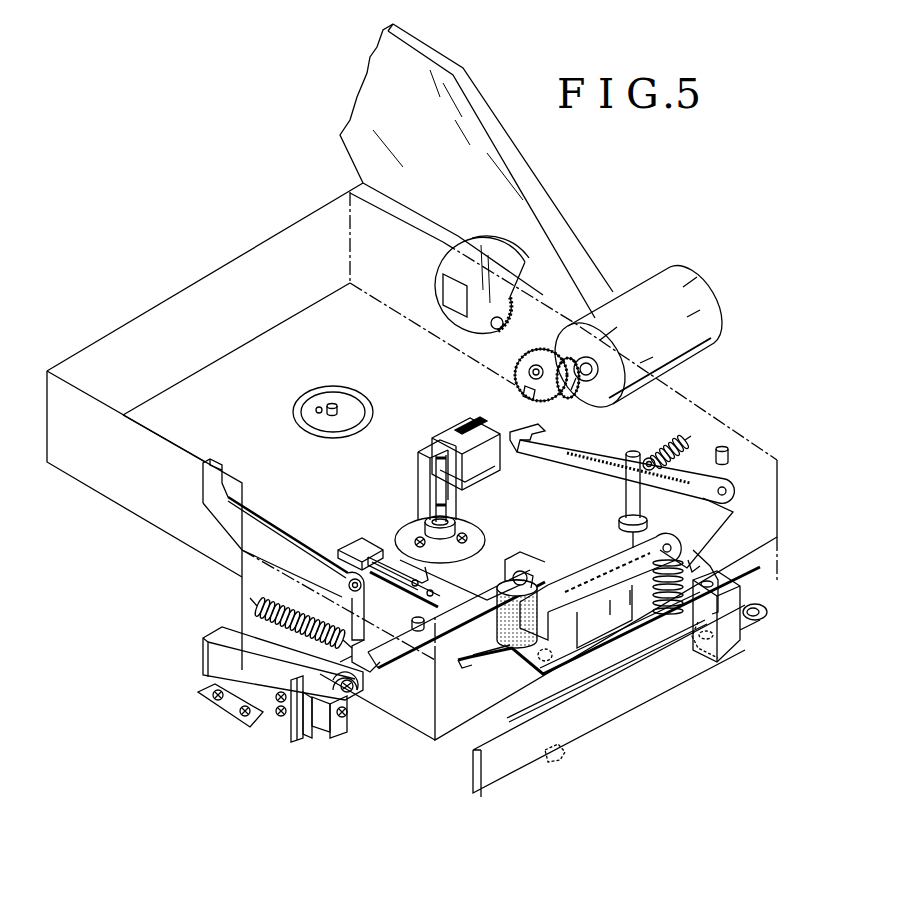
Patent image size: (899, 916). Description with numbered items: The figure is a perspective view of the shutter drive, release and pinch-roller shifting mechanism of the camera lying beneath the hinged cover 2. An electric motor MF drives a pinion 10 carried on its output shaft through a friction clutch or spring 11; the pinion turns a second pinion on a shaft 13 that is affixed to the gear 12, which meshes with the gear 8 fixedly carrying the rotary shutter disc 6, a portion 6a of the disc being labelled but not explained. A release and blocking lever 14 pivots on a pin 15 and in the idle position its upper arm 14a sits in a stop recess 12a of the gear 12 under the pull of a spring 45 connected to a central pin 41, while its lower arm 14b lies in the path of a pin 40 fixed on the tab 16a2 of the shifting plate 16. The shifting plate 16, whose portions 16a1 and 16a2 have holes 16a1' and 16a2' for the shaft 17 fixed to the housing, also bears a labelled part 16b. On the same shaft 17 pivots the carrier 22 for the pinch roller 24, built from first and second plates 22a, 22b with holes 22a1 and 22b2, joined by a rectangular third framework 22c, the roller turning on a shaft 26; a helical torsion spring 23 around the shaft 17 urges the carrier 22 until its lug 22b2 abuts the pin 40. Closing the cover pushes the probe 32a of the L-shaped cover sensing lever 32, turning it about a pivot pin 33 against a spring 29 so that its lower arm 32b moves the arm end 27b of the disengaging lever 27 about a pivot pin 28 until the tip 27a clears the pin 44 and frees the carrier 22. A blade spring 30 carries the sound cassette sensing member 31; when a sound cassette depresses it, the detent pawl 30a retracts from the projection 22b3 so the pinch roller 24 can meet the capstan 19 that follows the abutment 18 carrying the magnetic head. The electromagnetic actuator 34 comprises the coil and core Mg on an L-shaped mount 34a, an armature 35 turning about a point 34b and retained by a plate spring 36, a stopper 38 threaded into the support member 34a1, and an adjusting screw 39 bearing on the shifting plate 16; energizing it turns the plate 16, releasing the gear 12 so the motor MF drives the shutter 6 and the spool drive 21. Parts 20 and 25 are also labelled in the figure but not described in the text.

The cover 2 is at (434, 169).
The rotary shutter disc 6 is at (507, 256).
The window of cam gear 6a is at (443, 289).
The gear 8 is at (522, 318).
The pinion 10 is at (592, 381).
The friction clutch or spring 11 is at (573, 396).
The gear 12 is at (542, 349).
The stop recess 12a is at (525, 393).
The shaft 13 is at (529, 373).
The release and blocking lever 14 is at (730, 482).
The upper arm 14a is at (545, 434).
The lower arm 14b is at (692, 532).
The pin 15 is at (728, 446).
The shifting plate 16 is at (658, 682).
The hole of base plate 16a1 is at (737, 590).
The hole 16a1' is at (733, 582).
The tab 16a2 is at (758, 652).
The hole 16a2' is at (713, 662).
The notch of base plate 16b is at (565, 750).
The shaft 17 is at (633, 451).
The abutment 18 is at (474, 435).
The capstan 19 is at (436, 494).
The guide bracket 20 is at (418, 470).
The spool drive 21 is at (362, 410).
The carrier 22 is at (612, 580).
The first plate 22a is at (577, 590).
The hole 22a1 is at (668, 544).
The second plate 22b is at (578, 678).
The lug 22b2 is at (700, 575).
The projection 22b3 is at (466, 670).
The third framework 22c is at (600, 655).
The helical torsion spring 23 is at (517, 722).
The pinch roller 24 is at (500, 642).
The plunger 25 is at (524, 574).
The shaft 26 is at (535, 581).
The disengaging lever 27 is at (462, 612).
The tip 27a is at (508, 560).
The arm end 27b is at (398, 658).
The pivot pin 28 is at (420, 632).
The spring 29 is at (272, 629).
The blade spring 30 is at (405, 587).
The detent pawl 30a is at (410, 560).
The sound cassette sensing member 31 is at (362, 540).
The cover sensing lever 32 is at (288, 545).
The probe 32a is at (213, 459).
The lower arm 32b is at (376, 665).
The pivot pin 33 is at (351, 592).
The electromagnetic actuator 34 is at (250, 700).
The mount 34a is at (208, 683).
The support member 34a1 is at (345, 738).
The pivot point 34b is at (298, 742).
The armature 35 is at (318, 738).
The plate spring 36 is at (278, 718).
The stopper 38 is at (349, 716).
The adjusting screw 39 is at (355, 691).
The pin 40 is at (757, 622).
The central pin 41 is at (680, 441).
The pin 44 is at (540, 662).
The spring 45 is at (650, 457).
The electric motor MF is at (640, 337).
The coil and core Mg is at (232, 630).